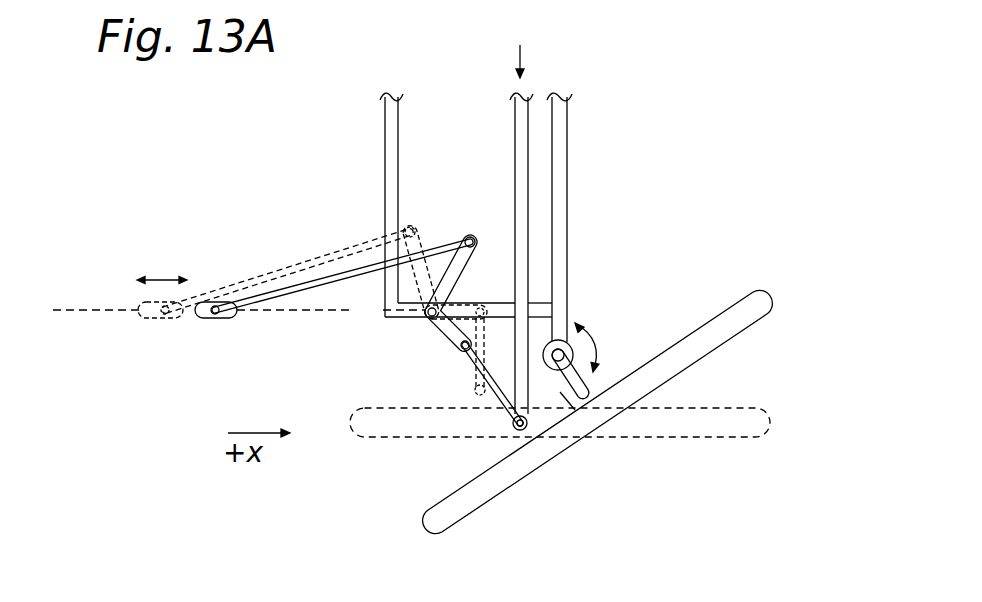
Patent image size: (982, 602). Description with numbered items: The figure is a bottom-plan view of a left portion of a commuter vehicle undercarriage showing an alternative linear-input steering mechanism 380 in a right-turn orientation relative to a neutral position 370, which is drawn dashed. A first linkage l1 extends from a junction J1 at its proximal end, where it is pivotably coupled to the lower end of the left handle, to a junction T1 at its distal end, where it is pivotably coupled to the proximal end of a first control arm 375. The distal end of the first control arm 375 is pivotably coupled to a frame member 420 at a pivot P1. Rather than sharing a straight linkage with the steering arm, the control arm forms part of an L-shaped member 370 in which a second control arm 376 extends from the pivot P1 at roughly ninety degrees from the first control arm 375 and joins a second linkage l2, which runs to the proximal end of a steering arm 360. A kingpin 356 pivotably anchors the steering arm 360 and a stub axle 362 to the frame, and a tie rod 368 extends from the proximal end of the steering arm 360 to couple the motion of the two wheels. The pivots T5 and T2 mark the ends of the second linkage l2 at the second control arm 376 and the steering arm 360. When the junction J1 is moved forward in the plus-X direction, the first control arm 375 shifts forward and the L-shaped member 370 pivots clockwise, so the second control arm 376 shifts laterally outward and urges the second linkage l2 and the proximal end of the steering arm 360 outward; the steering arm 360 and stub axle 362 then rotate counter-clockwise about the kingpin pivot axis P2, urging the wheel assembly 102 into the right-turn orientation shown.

The linear-input steering mechanism 380 is at (311, 188).
The tie rod 368 is at (515, 148).
The L-shaped member 370 is at (468, 290).
The second control arm 376 is at (428, 322).
The frame member 420 is at (398, 316).
The first control arm 375 is at (458, 242).
The junction T1 is at (467, 236).
The pivot P1 is at (426, 309).
The pivot T5 is at (462, 349).
The junction J1 is at (215, 316).
The first linkage l1 is at (315, 283).
The second linkage l2 is at (493, 402).
The pivot T2 is at (527, 432).
The kingpin pivot axis P2 is at (559, 352).
The kingpin 356 is at (573, 353).
The stub axle 362 is at (578, 387).
The steering arm 360 is at (586, 402).
The wheel assembly 102 is at (764, 318).